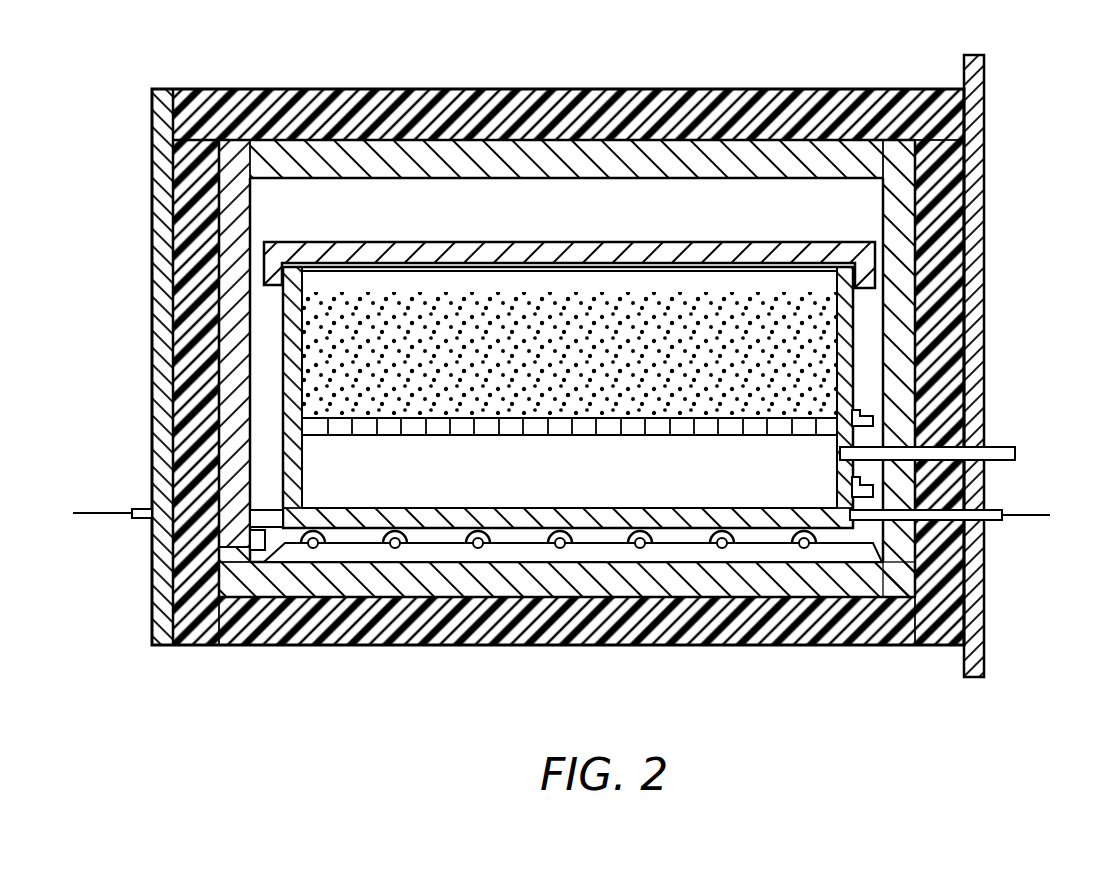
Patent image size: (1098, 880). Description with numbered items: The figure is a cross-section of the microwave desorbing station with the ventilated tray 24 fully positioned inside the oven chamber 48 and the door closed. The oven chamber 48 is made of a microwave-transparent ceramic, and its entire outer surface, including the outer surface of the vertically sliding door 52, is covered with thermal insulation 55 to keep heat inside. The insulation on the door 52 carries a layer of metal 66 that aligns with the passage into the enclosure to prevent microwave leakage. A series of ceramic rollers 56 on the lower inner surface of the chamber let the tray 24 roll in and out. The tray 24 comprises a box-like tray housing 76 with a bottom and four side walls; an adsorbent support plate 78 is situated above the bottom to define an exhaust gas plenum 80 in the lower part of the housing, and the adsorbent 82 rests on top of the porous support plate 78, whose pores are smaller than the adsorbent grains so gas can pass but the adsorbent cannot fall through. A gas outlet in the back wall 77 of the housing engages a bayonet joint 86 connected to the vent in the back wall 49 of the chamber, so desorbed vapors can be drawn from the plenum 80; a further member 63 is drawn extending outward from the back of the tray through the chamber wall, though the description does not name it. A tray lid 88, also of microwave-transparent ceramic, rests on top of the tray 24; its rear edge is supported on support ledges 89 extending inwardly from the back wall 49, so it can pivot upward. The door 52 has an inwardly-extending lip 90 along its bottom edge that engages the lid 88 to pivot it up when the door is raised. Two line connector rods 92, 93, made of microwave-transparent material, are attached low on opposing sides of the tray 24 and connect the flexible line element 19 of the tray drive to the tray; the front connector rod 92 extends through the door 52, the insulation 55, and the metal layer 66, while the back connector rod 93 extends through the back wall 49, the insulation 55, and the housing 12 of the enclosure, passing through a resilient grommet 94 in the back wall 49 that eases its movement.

The housing 12 is at (984, 658).
The flexible line element 19 is at (93, 512).
The tray 24 is at (432, 530).
The oven chamber 48 is at (766, 172).
The back wall 49 is at (905, 236).
The vertically sliding door 52 is at (250, 228).
The thermal insulation 55 is at (162, 318).
The ceramic rollers 56 is at (804, 548).
The rod 63 is at (1006, 447).
The layer of metal 66 is at (153, 165).
The tray housing 76 is at (300, 462).
The back wall 77 is at (847, 372).
The adsorbent support plate 78 is at (530, 430).
The exhaust gas plenum 80 is at (585, 397).
The adsorbent 82 is at (418, 315).
The bayonet joint 86 is at (876, 420).
The tray lid 88 is at (547, 252).
The support ledges 89 is at (890, 290).
The door lip 90 is at (256, 552).
The front connector rod 92 is at (136, 519).
The back connector rod 93 is at (1002, 522).
The resilient grommet 94 is at (906, 520).